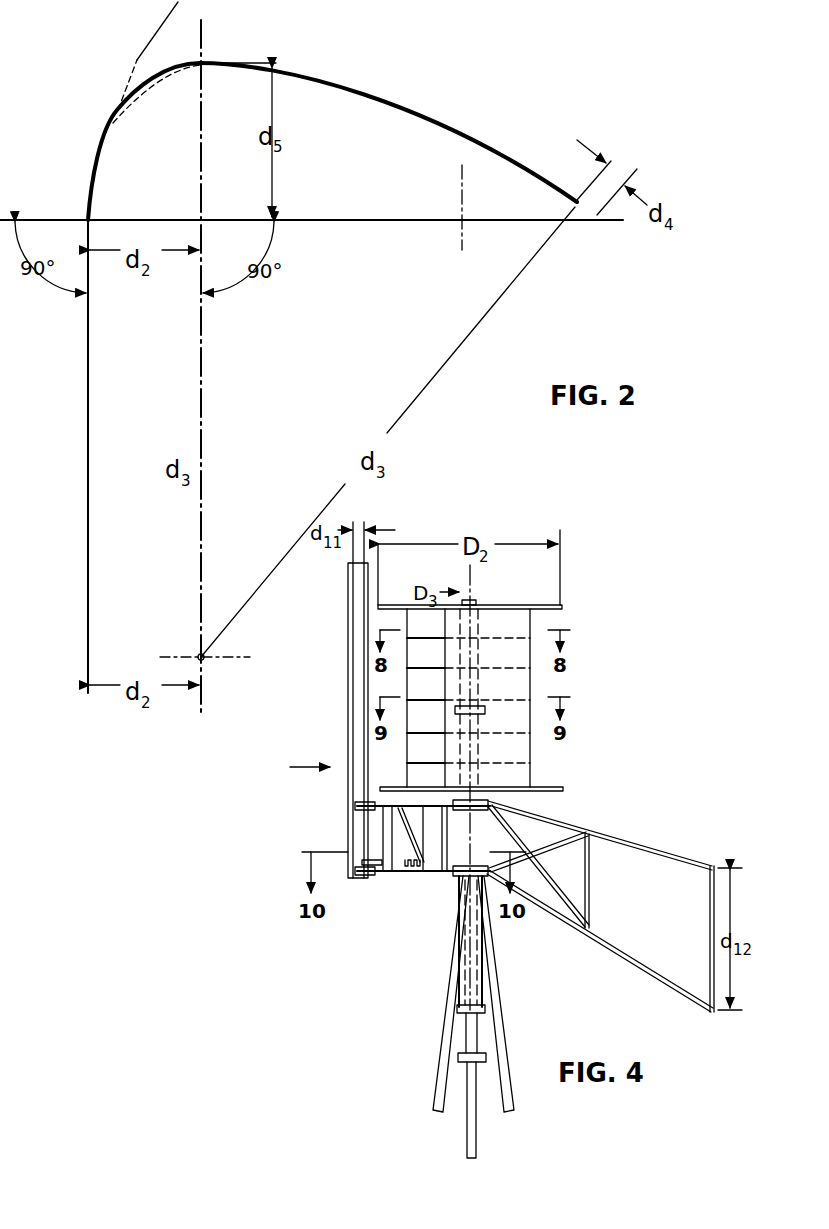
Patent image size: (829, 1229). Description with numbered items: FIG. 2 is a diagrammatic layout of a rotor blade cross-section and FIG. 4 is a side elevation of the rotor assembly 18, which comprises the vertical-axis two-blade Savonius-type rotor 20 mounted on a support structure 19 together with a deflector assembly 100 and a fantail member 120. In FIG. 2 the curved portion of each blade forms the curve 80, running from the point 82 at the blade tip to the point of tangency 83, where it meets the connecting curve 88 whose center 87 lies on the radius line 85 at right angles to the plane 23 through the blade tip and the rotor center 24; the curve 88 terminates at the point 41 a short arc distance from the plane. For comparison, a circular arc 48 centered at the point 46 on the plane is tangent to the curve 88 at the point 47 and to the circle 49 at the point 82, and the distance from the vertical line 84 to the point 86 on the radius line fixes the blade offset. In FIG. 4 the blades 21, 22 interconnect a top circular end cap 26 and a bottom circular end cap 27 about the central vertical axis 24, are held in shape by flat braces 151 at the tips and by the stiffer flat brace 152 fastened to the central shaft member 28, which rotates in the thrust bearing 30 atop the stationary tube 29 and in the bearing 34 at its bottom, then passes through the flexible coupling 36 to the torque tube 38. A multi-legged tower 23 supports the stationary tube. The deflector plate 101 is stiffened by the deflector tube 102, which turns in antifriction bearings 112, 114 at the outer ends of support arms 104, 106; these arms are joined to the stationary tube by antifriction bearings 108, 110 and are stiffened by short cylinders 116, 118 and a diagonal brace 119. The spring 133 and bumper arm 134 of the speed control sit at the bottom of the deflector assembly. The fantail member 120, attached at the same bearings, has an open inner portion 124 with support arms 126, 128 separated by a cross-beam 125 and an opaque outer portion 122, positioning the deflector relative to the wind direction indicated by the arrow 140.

In FIG. 4, the rotor assembly 18 is at (670, 652).
In FIG. 4, the support structure 19 is at (444, 1002).
In FIG. 4, the two-blade Savonius-type rotor 20 is at (533, 621).
In FIG. 2, the blade 21 is at (143, 87).
In FIG. 4, the blade 21 is at (410, 750).
In FIG. 4, the blade 22 is at (534, 782).
In FIG. 2, the tower 23 is at (359, 221).
In FIG. 4, the tower 23 is at (486, 975).
In FIG. 2, the central vertical axis 24 is at (461, 226).
In FIG. 4, the central vertical axis 24 is at (490, 590).
In FIG. 4, the circular end cap 26 is at (534, 604).
In FIG. 4, the circular end cap 27 is at (550, 795).
In FIG. 4, the central shaft member 28 is at (478, 694).
In FIG. 4, the stationary tube 29 is at (479, 762).
In FIG. 4, the thrust bearing 30 is at (487, 712).
In FIG. 4, the bearing 34 is at (486, 1010).
In FIG. 4, the flexible coupling 36 is at (487, 1058).
In FIG. 4, the torque tube 38 is at (477, 1136).
In FIG. 2, the point 41 is at (577, 197).
In FIG. 2, the point 46 is at (245, 219).
In FIG. 2, the point 47 is at (245, 63).
In FIG. 2, the circular arc 48 is at (157, 90).
In FIG. 2, the circle 49 is at (160, 33).
In FIG. 2, the curve 80 is at (103, 143).
In FIG. 2, the point 82 is at (86, 213).
In FIG. 2, the point of tangency 83 is at (203, 62).
In FIG. 2, the vertical line 84 is at (88, 457).
In FIG. 2, the radius line 85 is at (200, 156).
In FIG. 2, the point 86 is at (205, 224).
In FIG. 2, the center 87 is at (205, 660).
In FIG. 2, the curve 88 is at (448, 107).
In FIG. 4, the deflector assembly 100 is at (347, 618).
In FIG. 4, the deflector plate 101 is at (348, 672).
In FIG. 4, the deflector tube 102 is at (352, 843).
In FIG. 4, the support arm 104 is at (390, 804).
In FIG. 4, the support arm 106 is at (400, 875).
In FIG. 4, the antifriction bearing 108 is at (492, 804).
In FIG. 4, the antifriction bearing 110 is at (479, 866).
In FIG. 4, the antifriction bearing 112 is at (355, 803).
In FIG. 4, the antifriction bearing 114 is at (353, 871).
In FIG. 4, the short cylinder 116 is at (385, 838).
In FIG. 4, the short cylinder 118 is at (440, 876).
In FIG. 4, the diagonal brace 119 is at (420, 808).
In FIG. 4, the fantail member 120 is at (660, 856).
In FIG. 4, the outer portion 122 is at (648, 960).
In FIG. 4, the inner portion 124 is at (545, 897).
In FIG. 4, the cross-beam 125 is at (527, 853).
In FIG. 4, the support arm 126 is at (589, 836).
In FIG. 4, the support arm 128 is at (575, 930).
In FIG. 4, the spring 133 is at (412, 868).
In FIG. 4, the bumper arm 134 is at (372, 868).
In FIG. 4, the wind direction 140 is at (282, 766).
In FIG. 4, the flat brace 151 is at (440, 650).
In FIG. 4, the flat brace 152 is at (428, 706).